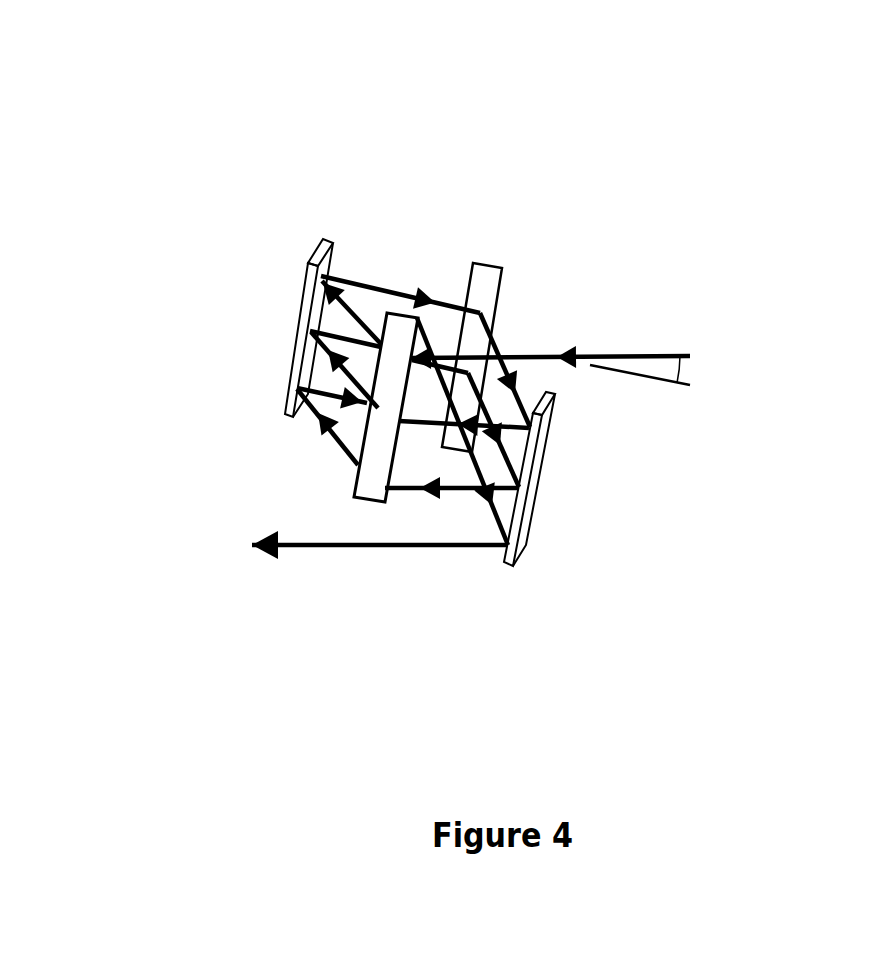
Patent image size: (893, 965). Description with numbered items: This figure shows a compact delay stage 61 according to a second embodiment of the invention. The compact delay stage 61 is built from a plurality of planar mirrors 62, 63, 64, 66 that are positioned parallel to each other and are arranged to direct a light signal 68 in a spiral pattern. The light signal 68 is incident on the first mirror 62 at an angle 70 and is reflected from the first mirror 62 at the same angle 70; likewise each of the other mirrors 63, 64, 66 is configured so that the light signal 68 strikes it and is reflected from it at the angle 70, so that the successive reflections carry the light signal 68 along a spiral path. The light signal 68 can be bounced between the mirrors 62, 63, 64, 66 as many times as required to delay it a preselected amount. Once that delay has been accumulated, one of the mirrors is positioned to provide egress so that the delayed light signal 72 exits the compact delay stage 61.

The compact delay stage 61 is at (88, 65).
The first mirror 62 is at (357, 485).
The planar mirror 63 is at (307, 290).
The planar mirror 64 is at (503, 277).
The planar mirror 66 is at (543, 467).
The light signal 68 is at (577, 352).
The angle 70 is at (683, 370).
The delayed light signal 72 is at (277, 553).